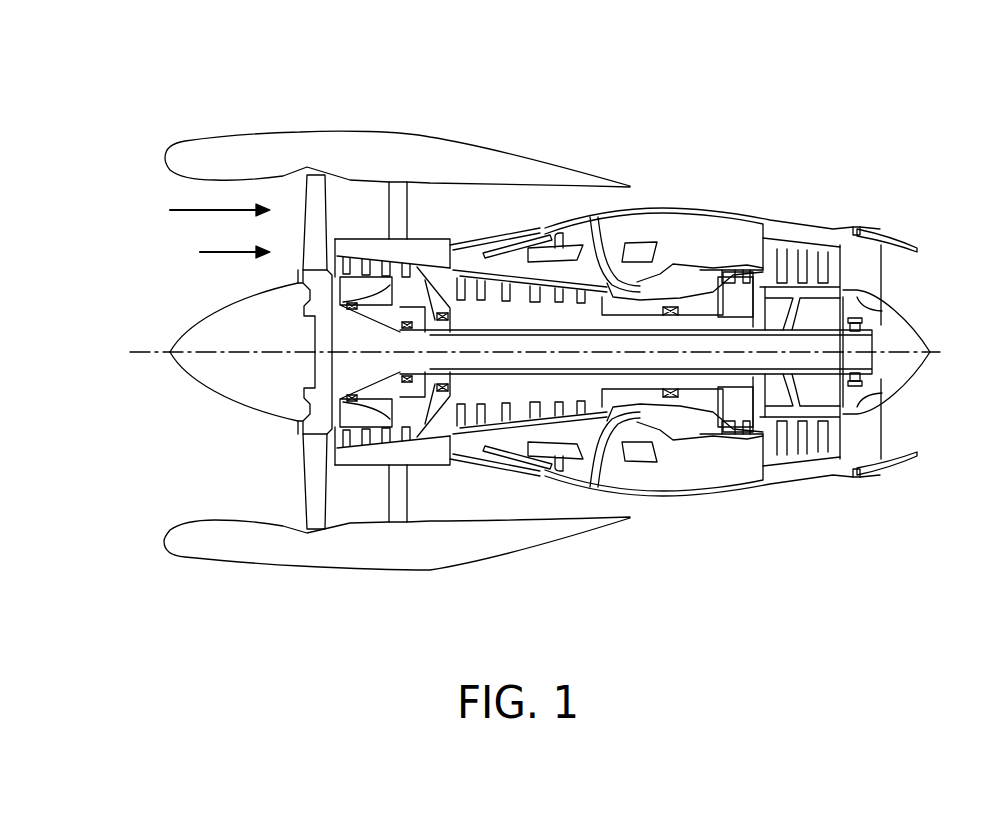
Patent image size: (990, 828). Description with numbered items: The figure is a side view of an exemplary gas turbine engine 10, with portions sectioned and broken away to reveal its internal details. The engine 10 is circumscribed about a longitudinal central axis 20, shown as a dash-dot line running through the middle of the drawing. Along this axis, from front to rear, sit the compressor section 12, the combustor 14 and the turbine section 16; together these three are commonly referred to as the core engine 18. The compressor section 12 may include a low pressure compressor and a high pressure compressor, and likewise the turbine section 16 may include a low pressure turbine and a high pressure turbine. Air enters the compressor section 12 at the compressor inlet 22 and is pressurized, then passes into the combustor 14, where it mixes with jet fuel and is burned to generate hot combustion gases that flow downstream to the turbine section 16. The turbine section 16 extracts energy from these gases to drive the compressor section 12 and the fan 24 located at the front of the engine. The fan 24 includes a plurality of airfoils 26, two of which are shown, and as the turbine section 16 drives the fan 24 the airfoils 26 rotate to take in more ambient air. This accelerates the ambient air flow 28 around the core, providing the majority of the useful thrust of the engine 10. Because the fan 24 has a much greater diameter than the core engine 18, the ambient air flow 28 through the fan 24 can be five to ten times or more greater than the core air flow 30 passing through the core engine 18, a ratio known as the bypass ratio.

The gas turbine engine 10 is at (627, 107).
The compressor section 12 is at (377, 265).
The combustor 14 is at (680, 285).
The turbine section 16 is at (802, 267).
The core engine 18 is at (738, 462).
The longitudinal central axis 20 is at (937, 350).
The compressor inlet 22 is at (333, 267).
The fan 24 is at (260, 420).
The airfoils 26 is at (312, 197).
The ambient air flow 28 is at (206, 208).
The core air flow 30 is at (221, 251).